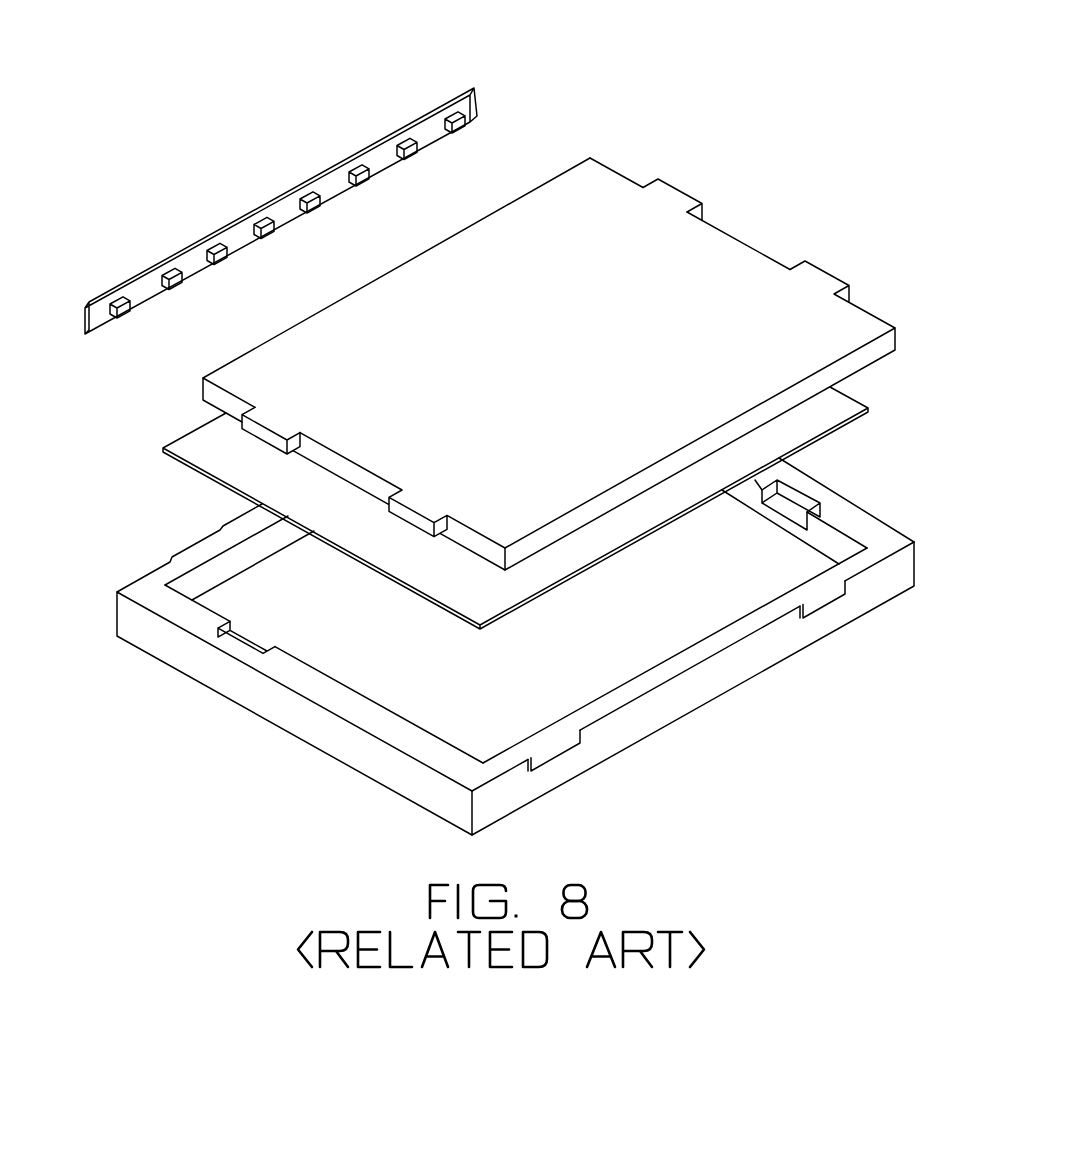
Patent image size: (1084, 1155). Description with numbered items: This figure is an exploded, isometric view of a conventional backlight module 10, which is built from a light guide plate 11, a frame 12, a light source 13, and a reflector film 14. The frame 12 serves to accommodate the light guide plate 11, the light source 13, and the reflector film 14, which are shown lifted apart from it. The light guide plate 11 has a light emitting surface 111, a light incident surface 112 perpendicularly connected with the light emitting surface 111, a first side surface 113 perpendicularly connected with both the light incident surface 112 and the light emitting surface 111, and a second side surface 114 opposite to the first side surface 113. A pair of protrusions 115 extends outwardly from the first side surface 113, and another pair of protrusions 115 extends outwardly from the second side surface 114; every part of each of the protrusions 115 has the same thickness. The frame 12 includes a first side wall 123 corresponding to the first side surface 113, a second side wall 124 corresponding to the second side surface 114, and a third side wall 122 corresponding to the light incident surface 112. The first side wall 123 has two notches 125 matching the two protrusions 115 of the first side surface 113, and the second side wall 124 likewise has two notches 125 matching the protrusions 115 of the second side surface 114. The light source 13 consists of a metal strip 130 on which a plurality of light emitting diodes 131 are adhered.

The backlight module 10 is at (576, 45).
The light guide plate 11 is at (505, 342).
The light emitting surface 111 is at (755, 263).
The light incident surface 112 is at (572, 158).
The first side surface 113 is at (220, 397).
The second side surface 114 is at (622, 168).
The protrusions 115 is at (255, 431).
The frame 12 is at (528, 643).
The third side wall 122 is at (250, 527).
The first side wall 123 is at (335, 695).
The second side wall 124 is at (842, 520).
The notches 125 is at (248, 645).
The light source 13 is at (317, 211).
The metal strip 130 is at (337, 183).
The light emitting diodes 131 is at (263, 227).
The reflector film 14 is at (835, 415).